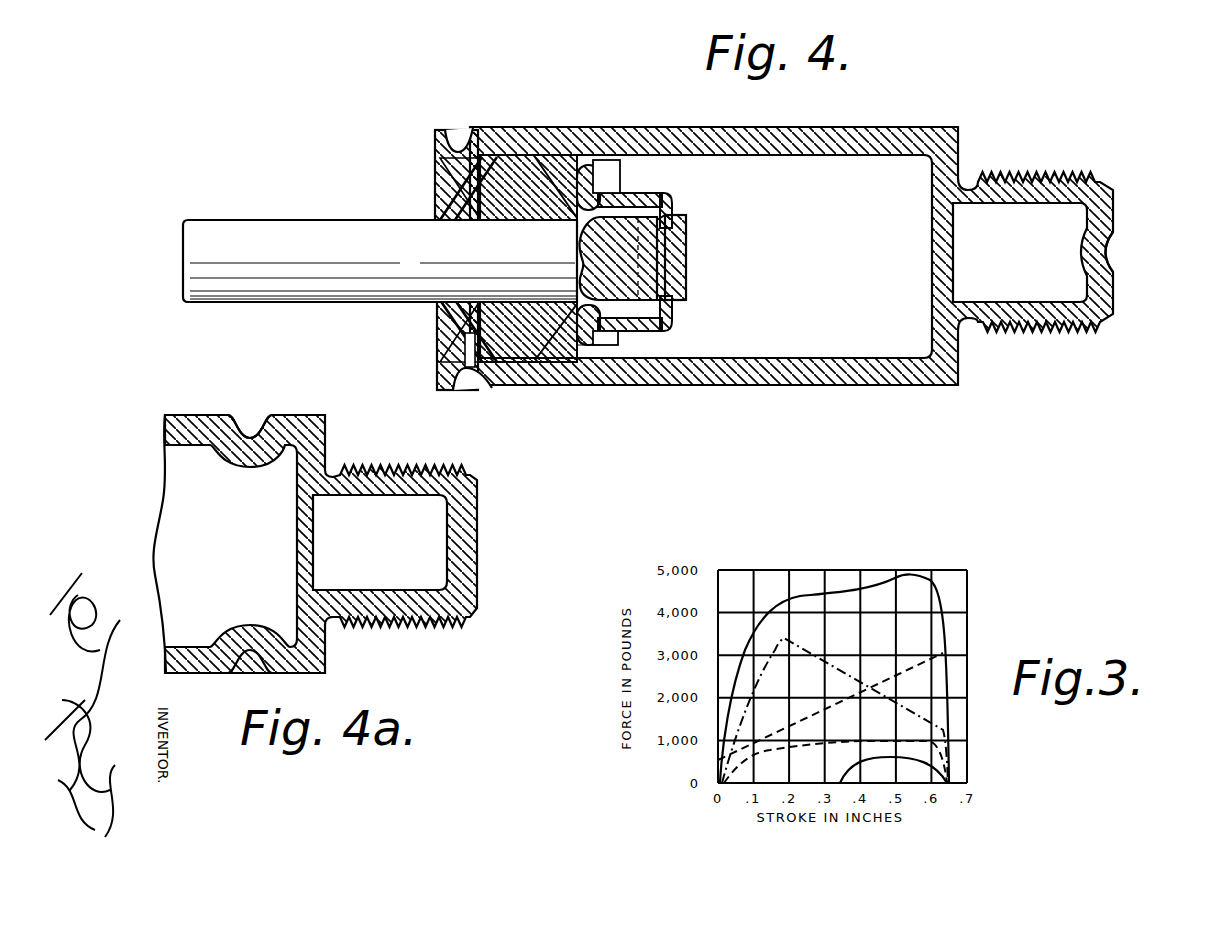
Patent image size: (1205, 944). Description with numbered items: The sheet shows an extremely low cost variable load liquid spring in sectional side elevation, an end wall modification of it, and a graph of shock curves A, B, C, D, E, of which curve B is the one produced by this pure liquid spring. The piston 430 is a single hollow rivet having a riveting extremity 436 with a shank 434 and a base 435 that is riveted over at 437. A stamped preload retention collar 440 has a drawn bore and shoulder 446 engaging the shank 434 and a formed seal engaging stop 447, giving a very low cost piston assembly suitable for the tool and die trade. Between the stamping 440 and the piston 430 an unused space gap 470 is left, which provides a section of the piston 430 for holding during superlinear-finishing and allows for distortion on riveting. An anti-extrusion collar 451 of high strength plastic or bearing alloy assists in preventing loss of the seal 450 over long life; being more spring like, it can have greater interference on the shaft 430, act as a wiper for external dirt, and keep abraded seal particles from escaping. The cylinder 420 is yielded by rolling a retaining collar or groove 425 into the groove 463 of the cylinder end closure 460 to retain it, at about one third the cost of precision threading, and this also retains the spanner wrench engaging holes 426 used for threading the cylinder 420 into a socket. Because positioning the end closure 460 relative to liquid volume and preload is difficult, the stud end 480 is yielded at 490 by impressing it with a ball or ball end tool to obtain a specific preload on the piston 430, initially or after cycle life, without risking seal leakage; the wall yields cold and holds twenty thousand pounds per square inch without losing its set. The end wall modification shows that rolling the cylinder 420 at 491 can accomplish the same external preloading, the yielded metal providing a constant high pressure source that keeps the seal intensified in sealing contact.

In FIG. 4, the cylinder 420 is at (868, 128).
In FIG. 4A, the cylinder 420 is at (184, 417).
In FIG. 4, the retaining collar or groove 425 is at (462, 130).
In FIG. 4, the spanner wrench engaging holes 426 is at (462, 390).
In FIG. 4, the piston 430 is at (242, 302).
In FIG. 4, the shank 434 is at (672, 214).
In FIG. 4, the base 435 is at (672, 314).
In FIG. 4, the riveting extremity 436 is at (686, 252).
In FIG. 4, the riveted over portion 437 is at (686, 224).
In FIG. 4, the stamped preload retention collar 440 is at (658, 357).
In FIG. 4, the drawn bore and shoulder 446 is at (686, 268).
In FIG. 4, the seal engaging stop 447 is at (576, 347).
In FIG. 4, the seal 450 is at (540, 186).
In FIG. 4, the anti-extrusion collar 451 is at (454, 209).
In FIG. 4, the cylinder end closure 460 is at (435, 351).
In FIG. 4, the groove 463 is at (436, 180).
In FIG. 4, the unused space gap 470 is at (660, 195).
In FIG. 4, the stud end 480 is at (1035, 188).
In FIG. 4A, the stud end 480 is at (386, 472).
In FIG. 4, the yielded impression 490 is at (1113, 254).
In FIG. 4A, the rolled location 491 is at (252, 435).
In FIG. 3, the force curve A is at (780, 598).
In FIG. 3, the curve B is at (804, 728).
In FIG. 3, the force curve C is at (788, 642).
In FIG. 3, the force curve D is at (847, 746).
In FIG. 3, the force curve E is at (846, 765).